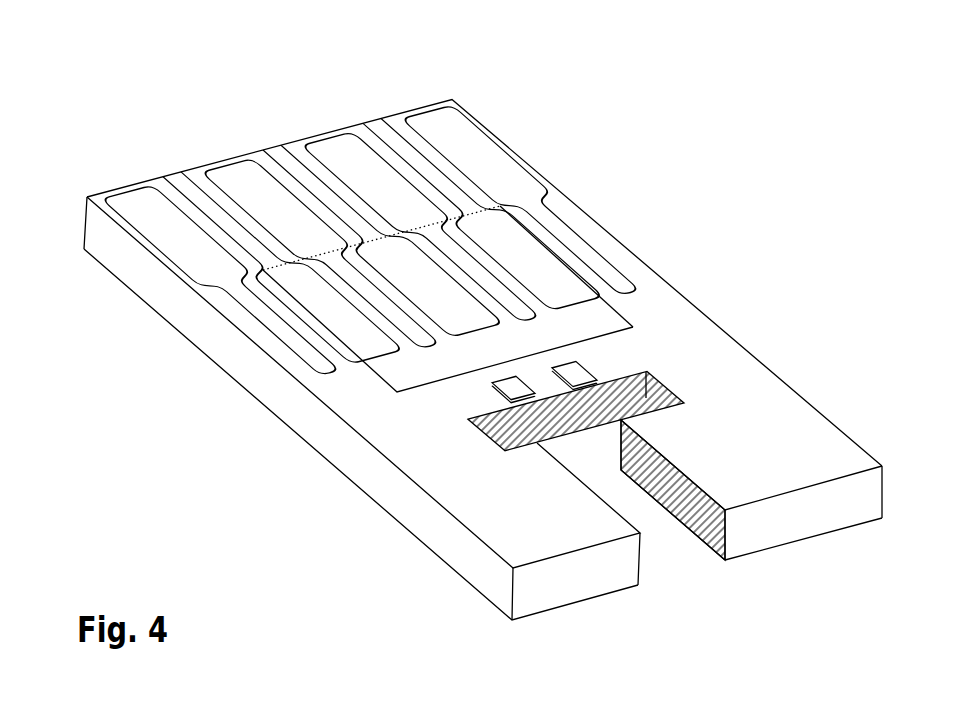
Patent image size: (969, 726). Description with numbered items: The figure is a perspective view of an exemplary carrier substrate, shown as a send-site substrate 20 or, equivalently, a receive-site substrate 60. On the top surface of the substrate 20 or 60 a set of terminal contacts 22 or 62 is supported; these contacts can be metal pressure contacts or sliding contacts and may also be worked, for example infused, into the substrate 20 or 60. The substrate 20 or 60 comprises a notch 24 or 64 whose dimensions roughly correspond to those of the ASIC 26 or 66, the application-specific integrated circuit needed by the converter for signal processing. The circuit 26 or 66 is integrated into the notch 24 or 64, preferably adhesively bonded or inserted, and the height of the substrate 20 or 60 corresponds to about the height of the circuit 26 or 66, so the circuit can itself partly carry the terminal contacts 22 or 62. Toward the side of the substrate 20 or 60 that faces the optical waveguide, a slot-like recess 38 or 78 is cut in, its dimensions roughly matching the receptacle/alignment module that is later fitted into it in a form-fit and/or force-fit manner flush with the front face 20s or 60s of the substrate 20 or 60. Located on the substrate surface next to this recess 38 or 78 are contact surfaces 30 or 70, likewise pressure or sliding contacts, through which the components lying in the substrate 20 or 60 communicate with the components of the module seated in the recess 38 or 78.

The send-site substrate 20 is at (483, 360).
The receive-site substrate 60 is at (700, 415).
The front face of the substrate 20s is at (751, 490).
The front face of the substrate 60s is at (838, 523).
The terminal contacts 22 is at (376, 204).
The terminal contacts 62 is at (440, 128).
The notch 24 is at (491, 299).
The notch 64 is at (622, 318).
The ASIC 26 is at (593, 242).
The ASIC 66 is at (593, 322).
The contact surfaces 30 is at (592, 370).
The contact surfaces 70 is at (586, 372).
The recess 38 is at (534, 417).
The recess 78 is at (580, 462).